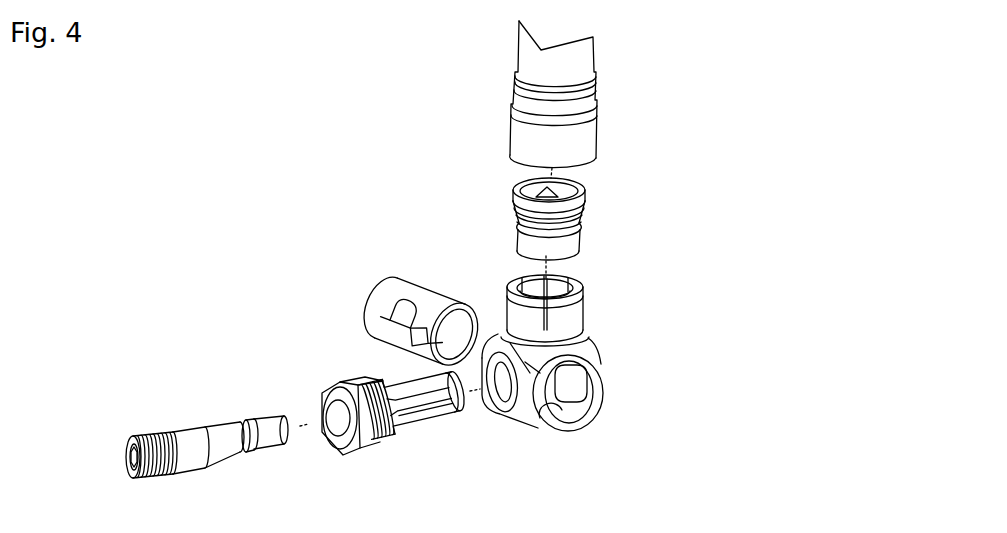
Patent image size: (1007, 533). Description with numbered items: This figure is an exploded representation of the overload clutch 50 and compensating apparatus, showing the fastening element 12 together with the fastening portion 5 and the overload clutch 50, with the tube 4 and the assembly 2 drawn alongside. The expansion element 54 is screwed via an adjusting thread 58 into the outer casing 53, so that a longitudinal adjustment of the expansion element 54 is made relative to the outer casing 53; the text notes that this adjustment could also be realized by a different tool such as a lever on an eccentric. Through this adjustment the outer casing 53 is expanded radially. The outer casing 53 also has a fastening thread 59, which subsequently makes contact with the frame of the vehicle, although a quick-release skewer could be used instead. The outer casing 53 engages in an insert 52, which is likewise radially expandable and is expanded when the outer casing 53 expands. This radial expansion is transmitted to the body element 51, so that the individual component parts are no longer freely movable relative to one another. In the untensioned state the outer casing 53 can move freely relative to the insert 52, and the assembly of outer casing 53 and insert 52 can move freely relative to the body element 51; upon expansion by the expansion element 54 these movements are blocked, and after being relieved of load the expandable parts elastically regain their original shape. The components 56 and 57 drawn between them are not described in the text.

The connector assembly 2 is at (726, 246).
The tube 4 is at (652, 64).
The fastening portion 5 is at (352, 289).
The fastening element 12 is at (212, 352).
The overload clutch 50 is at (717, 165).
The body element 51 is at (601, 367).
The insert 52 is at (415, 288).
The outer casing 53 is at (410, 393).
The expansion element 54 is at (187, 453).
The collet 56 is at (572, 312).
The plug cap 57 is at (605, 221).
The adjusting thread 58 is at (153, 432).
The fastening thread 59 is at (397, 432).